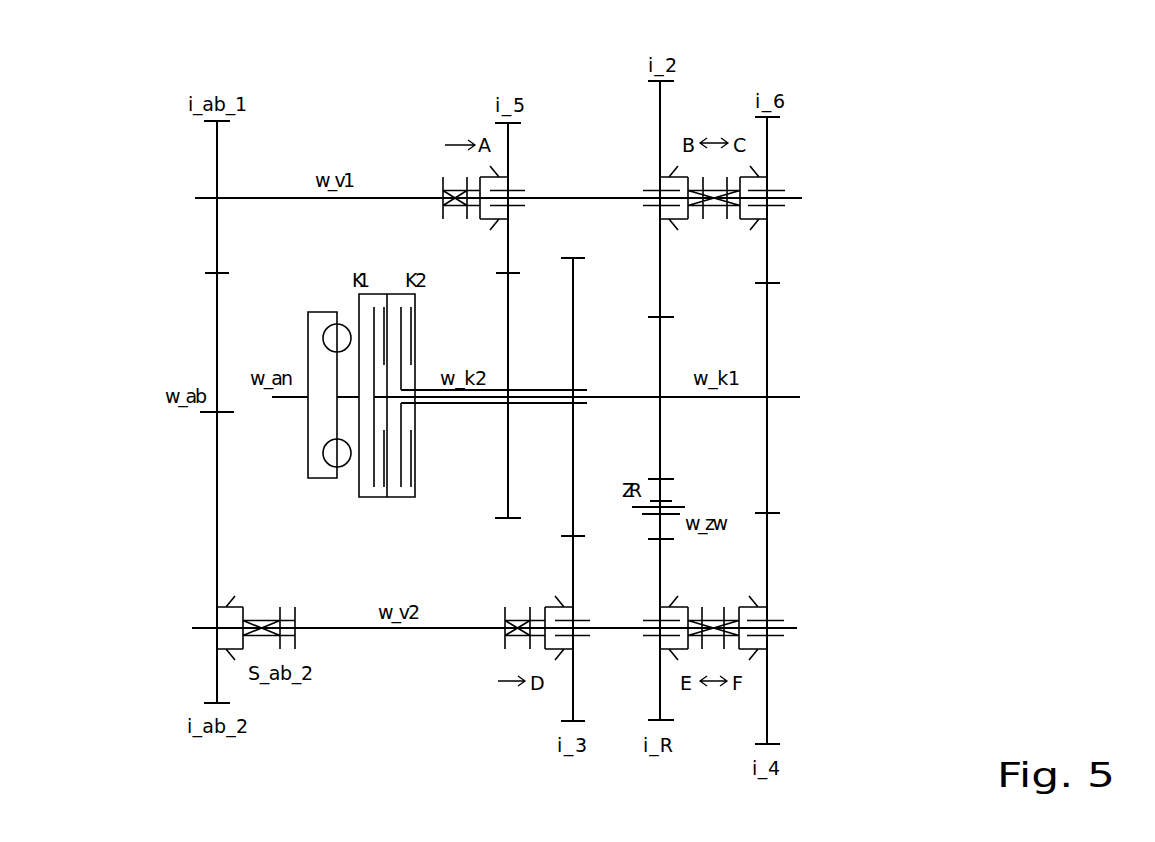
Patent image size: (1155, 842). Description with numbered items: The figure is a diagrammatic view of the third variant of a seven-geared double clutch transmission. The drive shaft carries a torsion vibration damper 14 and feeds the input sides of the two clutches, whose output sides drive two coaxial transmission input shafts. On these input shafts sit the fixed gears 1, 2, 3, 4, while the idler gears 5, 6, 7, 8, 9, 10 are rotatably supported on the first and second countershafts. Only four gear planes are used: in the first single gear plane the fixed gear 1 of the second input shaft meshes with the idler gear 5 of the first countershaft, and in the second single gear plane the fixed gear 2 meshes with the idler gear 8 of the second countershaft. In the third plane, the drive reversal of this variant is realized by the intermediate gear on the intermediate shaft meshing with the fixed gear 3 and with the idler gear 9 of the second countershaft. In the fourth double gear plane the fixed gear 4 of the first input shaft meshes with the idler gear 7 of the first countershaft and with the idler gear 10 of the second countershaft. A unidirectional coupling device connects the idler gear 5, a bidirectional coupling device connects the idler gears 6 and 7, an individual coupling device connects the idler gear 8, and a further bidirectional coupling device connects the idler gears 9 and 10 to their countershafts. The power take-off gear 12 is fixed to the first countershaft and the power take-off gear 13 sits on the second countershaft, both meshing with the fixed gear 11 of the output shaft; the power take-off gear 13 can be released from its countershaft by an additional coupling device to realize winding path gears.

The fixed gear of the second transmission input shaft 1 is at (508, 283).
The fixed gear of the second transmission input shaft 2 is at (573, 270).
The fixed gear of the first transmission input shaft 3 is at (657, 347).
The fixed gear of the first transmission input shaft 4 is at (768, 332).
The idler gear of the first countershaft 5 is at (508, 247).
The idler gear of the first countershaft 6 is at (660, 244).
The idler gear of the first countershaft 7 is at (768, 260).
The idler gear of the second countershaft 8 is at (573, 563).
The idler gear of the second countershaft 9 is at (660, 556).
The idler gear of the second countershaft 10 is at (768, 592).
The fixed gear of the output shaft 11 is at (217, 322).
The power take-off gear of the first countershaft 12 is at (217, 233).
The power take-off gear of the second countershaft 13 is at (215, 588).
The torsion vibration damper 14 is at (307, 460).